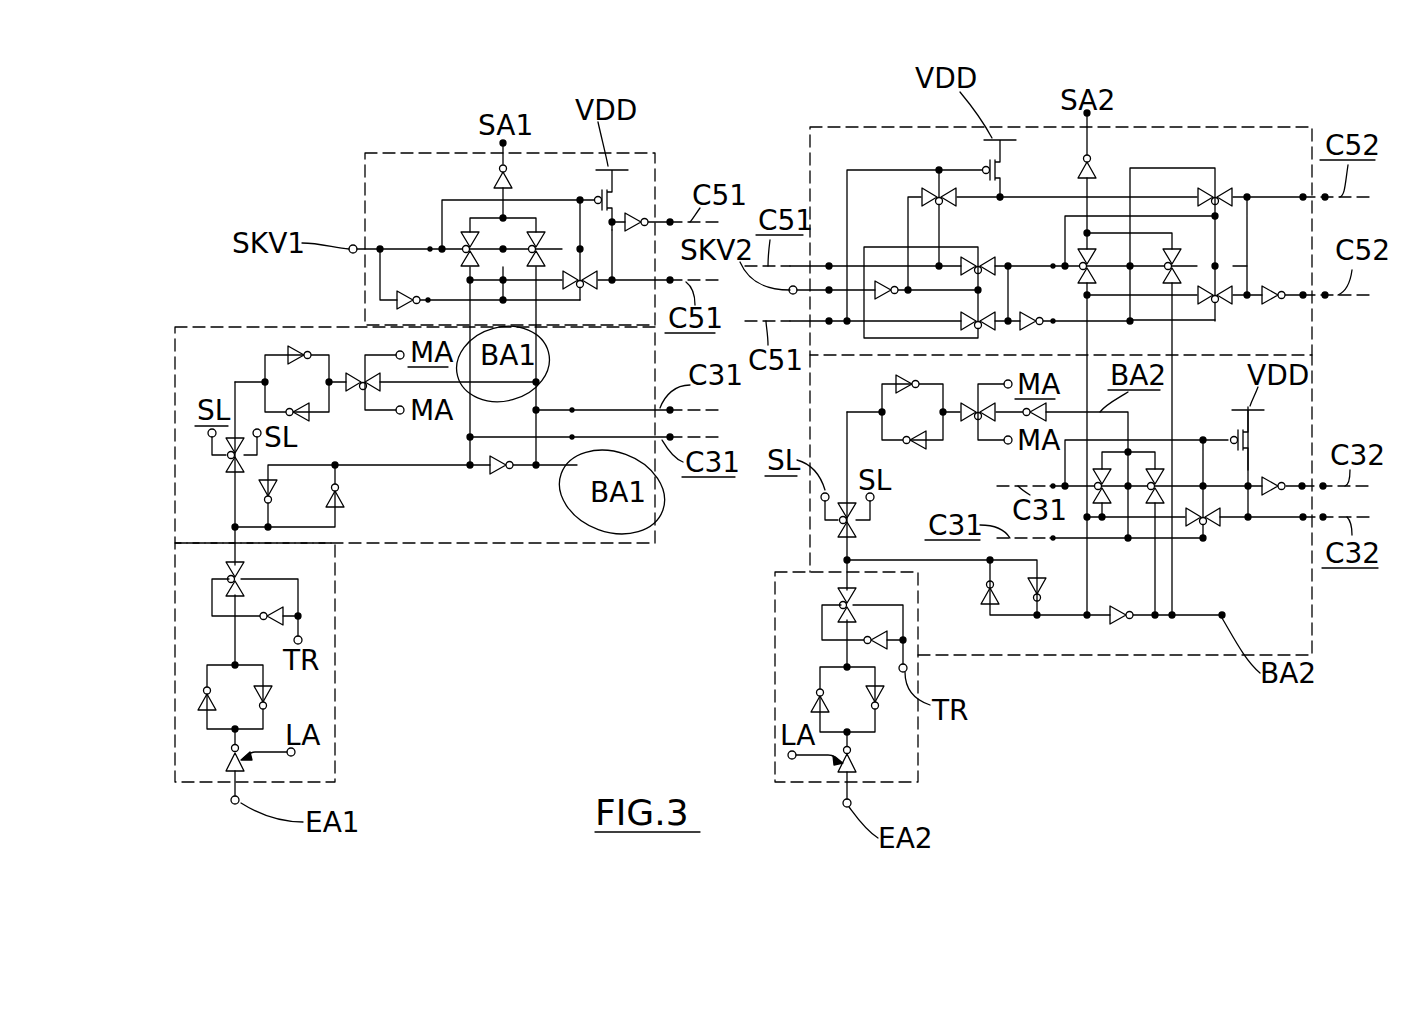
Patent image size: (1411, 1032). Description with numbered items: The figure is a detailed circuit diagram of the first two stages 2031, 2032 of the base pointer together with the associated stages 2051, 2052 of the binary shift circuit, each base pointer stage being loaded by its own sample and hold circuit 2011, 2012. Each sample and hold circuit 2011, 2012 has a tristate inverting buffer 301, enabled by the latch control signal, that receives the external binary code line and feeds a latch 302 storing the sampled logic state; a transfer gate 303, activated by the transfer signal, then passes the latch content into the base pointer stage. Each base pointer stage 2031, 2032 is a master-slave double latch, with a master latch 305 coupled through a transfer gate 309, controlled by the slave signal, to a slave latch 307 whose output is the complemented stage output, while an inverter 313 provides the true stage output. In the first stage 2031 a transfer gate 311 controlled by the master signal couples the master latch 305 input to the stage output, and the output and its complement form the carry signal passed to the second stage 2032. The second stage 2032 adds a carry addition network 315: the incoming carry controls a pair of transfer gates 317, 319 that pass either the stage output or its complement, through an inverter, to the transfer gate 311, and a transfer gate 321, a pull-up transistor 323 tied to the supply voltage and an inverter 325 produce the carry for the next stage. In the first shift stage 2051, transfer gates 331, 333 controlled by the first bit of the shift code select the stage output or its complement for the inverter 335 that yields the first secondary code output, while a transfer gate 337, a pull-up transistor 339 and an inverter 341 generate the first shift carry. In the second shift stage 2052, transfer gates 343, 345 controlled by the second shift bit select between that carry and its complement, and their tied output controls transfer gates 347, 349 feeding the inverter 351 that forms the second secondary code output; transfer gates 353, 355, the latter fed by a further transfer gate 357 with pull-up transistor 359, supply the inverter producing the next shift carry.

The tristate inverting buffer 301 is at (228, 758).
The latch 302 is at (272, 693).
The transfer gate 303 is at (242, 572).
The master latch 305 is at (262, 362).
The slave latch 307 is at (350, 492).
The transfer gate 309 is at (230, 457).
The transfer gate 311 is at (360, 392).
The inverter 313 is at (510, 470).
The carry addition network 315 is at (1215, 525).
The transfer gate 317 is at (1162, 475).
The transfer gate 319 is at (1098, 505).
The transfer gate 321 is at (1210, 548).
The pull-up transistor 323 is at (1242, 437).
The inverter 325 is at (1278, 475).
The transfer gate 331 is at (542, 235).
The transfer gate 333 is at (462, 242).
The inverter 335 is at (498, 172).
The transfer gate 337 is at (585, 288).
The pull-up transistor 339 is at (616, 195).
The inverter 341 is at (638, 212).
The transfer gate 343 is at (985, 325).
The transfer gate 345 is at (985, 260).
The transfer gate 347 is at (1180, 258).
The transfer gate 349 is at (1084, 278).
The inverter 351 is at (1093, 160).
The transfer gate 353 is at (1218, 305).
The transfer gate 355 is at (1218, 190).
The transfer gate 357 is at (937, 192).
The pull-up transistor 359 is at (1002, 172).
The sample and hold circuit 2011 is at (337, 637).
The sample and hold circuit 2012 is at (910, 786).
The first stage of the base pointer 2031 is at (594, 548).
The second stage of the base pointer 2032 is at (1198, 655).
The first stage of the binary shift circuit 2051 is at (370, 150).
The second stage of the binary shift circuit 2052 is at (1185, 125).